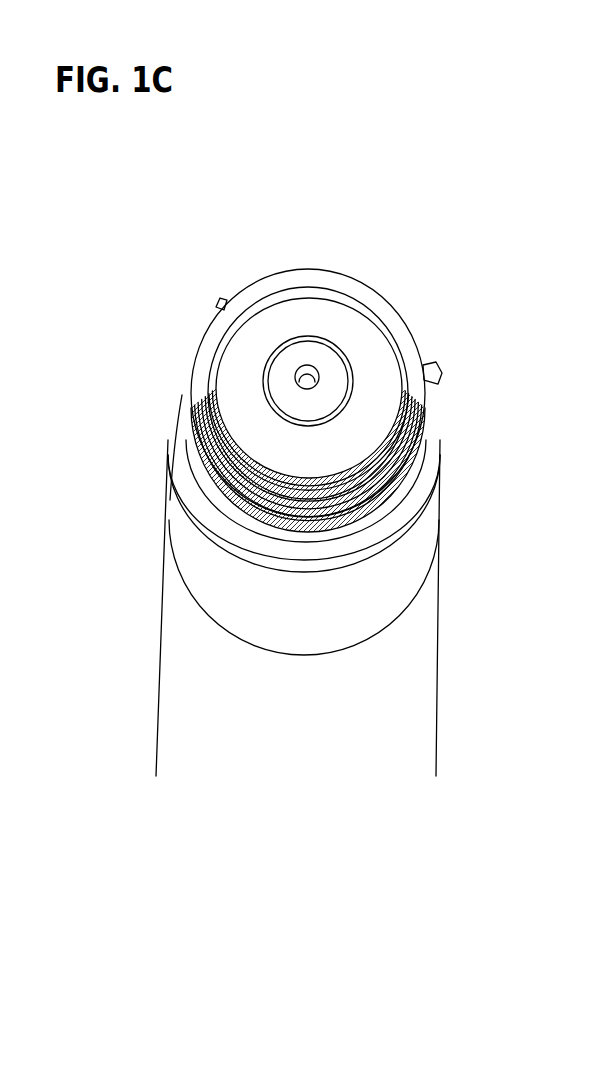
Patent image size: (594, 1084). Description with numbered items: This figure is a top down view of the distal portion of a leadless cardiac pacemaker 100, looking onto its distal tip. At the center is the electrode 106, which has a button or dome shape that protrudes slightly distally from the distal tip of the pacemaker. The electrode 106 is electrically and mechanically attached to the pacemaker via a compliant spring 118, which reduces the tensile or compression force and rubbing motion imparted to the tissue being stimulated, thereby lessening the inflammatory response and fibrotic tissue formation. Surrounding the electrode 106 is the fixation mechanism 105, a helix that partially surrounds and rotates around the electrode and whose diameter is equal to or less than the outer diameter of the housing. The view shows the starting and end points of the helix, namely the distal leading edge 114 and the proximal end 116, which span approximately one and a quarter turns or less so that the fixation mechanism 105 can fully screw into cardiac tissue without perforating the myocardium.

The leadless cardiac pacemaker 100 is at (474, 294).
The fixation mechanism 105 is at (248, 282).
The electrode 106 is at (314, 356).
The distal leading edge 114 is at (197, 376).
The proximal end 116 is at (307, 240).
The compliant spring 118 is at (350, 382).